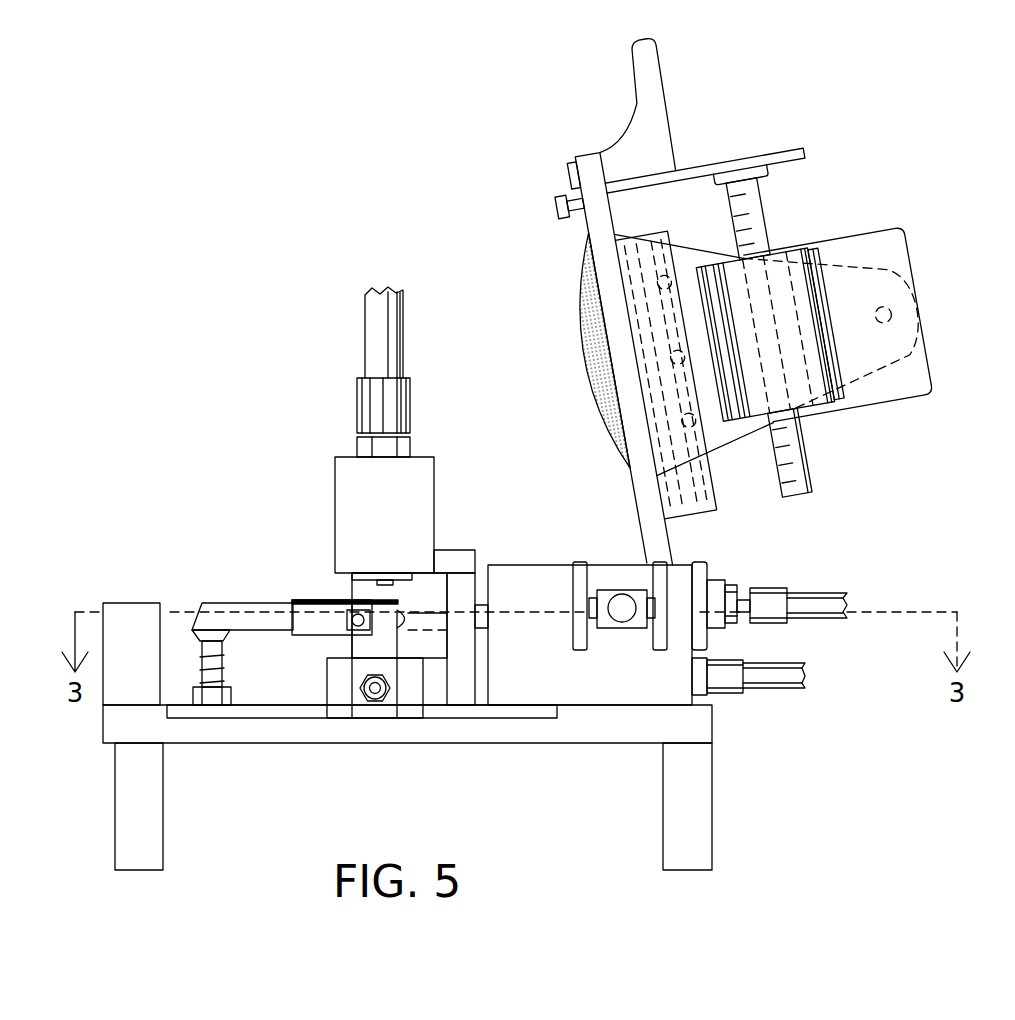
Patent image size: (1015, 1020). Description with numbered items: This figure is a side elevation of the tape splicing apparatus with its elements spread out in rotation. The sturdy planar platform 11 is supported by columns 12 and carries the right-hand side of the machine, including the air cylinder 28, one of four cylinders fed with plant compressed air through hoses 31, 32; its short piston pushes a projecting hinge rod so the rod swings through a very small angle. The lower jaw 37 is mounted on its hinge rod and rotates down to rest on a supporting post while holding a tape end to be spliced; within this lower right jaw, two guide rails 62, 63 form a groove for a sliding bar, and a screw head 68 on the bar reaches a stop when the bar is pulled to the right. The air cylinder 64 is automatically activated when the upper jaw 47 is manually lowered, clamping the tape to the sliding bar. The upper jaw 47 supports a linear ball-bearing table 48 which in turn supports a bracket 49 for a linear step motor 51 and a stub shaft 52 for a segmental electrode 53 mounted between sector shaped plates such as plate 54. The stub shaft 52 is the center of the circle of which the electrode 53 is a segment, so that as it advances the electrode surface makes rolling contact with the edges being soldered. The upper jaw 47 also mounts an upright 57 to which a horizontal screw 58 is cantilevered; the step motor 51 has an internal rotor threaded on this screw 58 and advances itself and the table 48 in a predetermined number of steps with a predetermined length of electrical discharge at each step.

The planar platform 11 is at (582, 728).
The columns 12 is at (150, 812).
The air cylinder 28 is at (548, 651).
The hose 31 is at (828, 590).
The hose 32 is at (780, 690).
The lower jaw 37 is at (226, 616).
The upper jaw 47 is at (625, 143).
The linear ball-bearing table 48 is at (708, 452).
The bracket 49 is at (920, 363).
The linear step motor 51 is at (838, 393).
The stub shaft 52 is at (893, 313).
The segmental electrode 53 is at (597, 380).
The sector shaped plate 54 is at (895, 267).
The upright 57 is at (787, 153).
The horizontal screw 58 is at (752, 205).
The guide rail 62 is at (457, 592).
The guide rail 63 is at (312, 600).
The air cylinder 64 is at (415, 493).
The screw head 68 is at (352, 613).